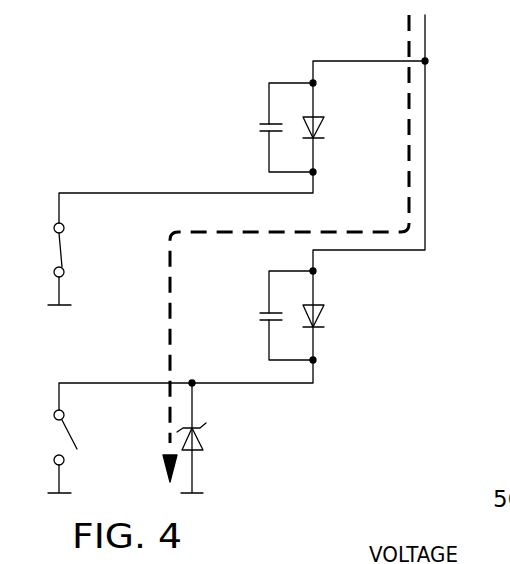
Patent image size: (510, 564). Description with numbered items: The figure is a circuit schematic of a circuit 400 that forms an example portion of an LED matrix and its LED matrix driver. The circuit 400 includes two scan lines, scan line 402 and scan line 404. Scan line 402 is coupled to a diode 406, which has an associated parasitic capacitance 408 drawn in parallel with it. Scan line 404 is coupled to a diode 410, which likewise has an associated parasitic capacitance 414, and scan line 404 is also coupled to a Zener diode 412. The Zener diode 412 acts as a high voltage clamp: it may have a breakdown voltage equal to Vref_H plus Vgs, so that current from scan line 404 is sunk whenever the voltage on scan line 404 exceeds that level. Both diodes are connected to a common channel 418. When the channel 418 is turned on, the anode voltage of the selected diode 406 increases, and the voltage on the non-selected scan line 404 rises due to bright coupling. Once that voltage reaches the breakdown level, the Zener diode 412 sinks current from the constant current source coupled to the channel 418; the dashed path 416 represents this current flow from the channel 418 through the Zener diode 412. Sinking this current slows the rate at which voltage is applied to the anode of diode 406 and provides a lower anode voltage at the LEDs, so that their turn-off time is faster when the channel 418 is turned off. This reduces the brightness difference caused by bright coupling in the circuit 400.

The circuit 400 is at (130, 63).
The scan line 402 is at (115, 193).
The scan line 404 is at (115, 383).
The diode 406 is at (324, 130).
The parasitic capacitance 408 is at (259, 128).
The diode 410 is at (324, 318).
The Zener diode 412 is at (203, 431).
The parasitic capacitance 414 is at (259, 316).
The path 416 is at (168, 268).
The channel 418 is at (425, 40).